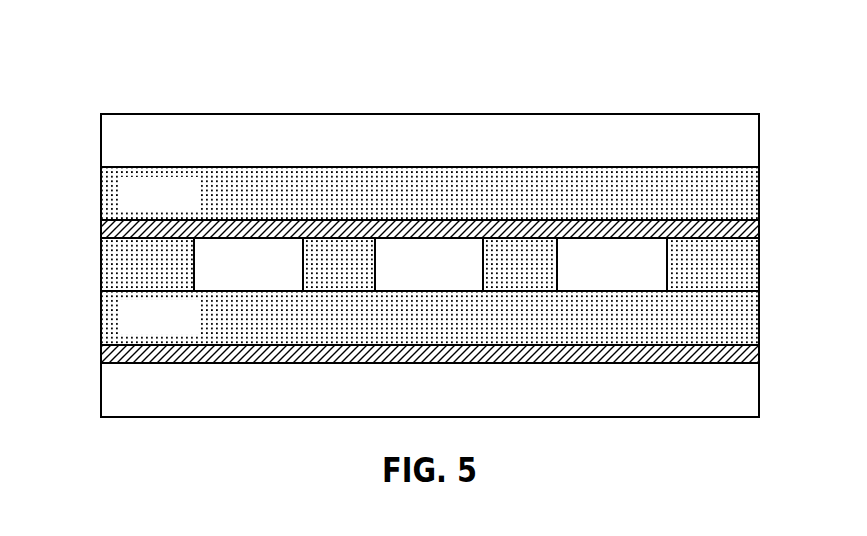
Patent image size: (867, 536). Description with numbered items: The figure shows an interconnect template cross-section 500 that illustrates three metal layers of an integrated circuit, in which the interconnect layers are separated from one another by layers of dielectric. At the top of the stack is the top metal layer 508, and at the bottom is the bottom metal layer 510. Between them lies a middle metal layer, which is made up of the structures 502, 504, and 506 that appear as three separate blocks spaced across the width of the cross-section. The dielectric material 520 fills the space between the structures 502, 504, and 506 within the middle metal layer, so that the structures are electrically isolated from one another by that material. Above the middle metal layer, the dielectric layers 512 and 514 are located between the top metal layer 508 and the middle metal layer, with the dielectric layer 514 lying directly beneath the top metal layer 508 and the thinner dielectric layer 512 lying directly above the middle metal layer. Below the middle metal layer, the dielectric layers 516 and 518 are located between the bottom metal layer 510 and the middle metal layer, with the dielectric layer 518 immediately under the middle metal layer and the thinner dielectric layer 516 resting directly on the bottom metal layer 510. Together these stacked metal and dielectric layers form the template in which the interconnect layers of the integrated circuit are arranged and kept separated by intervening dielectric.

The interconnect template cross-section 500 is at (567, 48).
The structure 502 is at (248, 264).
The structure 504 is at (429, 264).
The structure 506 is at (612, 264).
The top metal layer 508 is at (430, 140).
The bottom metal layer 510 is at (430, 390).
The dielectric layer 512 is at (757, 235).
The dielectric layer 514 is at (430, 193).
The dielectric layer 516 is at (758, 358).
The dielectric layer 518 is at (430, 318).
The dielectric material 520 is at (120, 263).